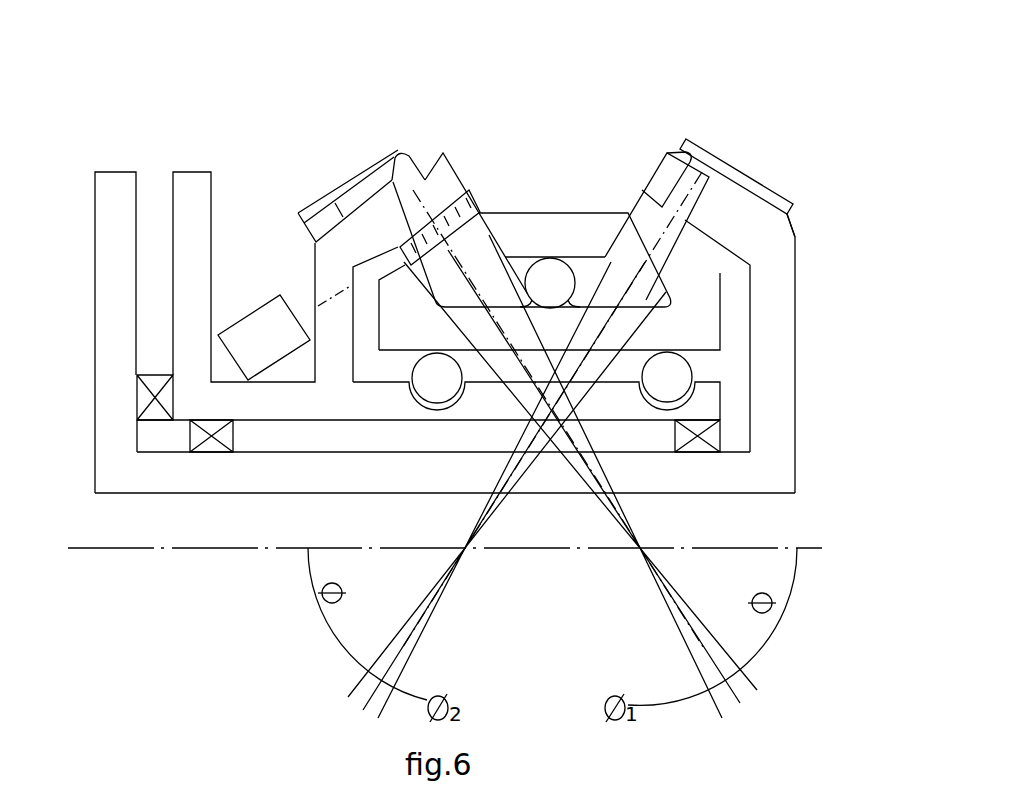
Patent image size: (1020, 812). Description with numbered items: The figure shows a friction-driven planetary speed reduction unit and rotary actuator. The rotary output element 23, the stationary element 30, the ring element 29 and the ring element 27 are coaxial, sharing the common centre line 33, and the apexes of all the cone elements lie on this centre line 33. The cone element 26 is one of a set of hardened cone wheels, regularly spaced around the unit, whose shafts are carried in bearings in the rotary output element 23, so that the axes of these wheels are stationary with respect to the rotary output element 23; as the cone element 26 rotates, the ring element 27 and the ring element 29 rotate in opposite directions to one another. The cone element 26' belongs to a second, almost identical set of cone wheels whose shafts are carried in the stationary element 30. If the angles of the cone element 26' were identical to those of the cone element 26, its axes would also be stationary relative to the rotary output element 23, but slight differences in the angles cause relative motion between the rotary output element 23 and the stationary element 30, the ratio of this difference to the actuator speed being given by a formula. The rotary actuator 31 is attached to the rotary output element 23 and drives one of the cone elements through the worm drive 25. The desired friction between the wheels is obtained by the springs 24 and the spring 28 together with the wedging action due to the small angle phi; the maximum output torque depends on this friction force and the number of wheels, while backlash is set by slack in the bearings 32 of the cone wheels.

The rotary output element 23 is at (198, 195).
The springs 24 is at (352, 183).
The worm drive 25 is at (477, 238).
The cone element 26 is at (514, 150).
The cone element 26' is at (743, 214).
The ring element 27 is at (570, 227).
The spring 28 is at (738, 172).
The ring element 29 is at (700, 325).
The stationary element 30 is at (772, 293).
The rotary actuator 31 is at (280, 297).
The bearings 32 is at (213, 443).
The centre line 33 is at (810, 548).